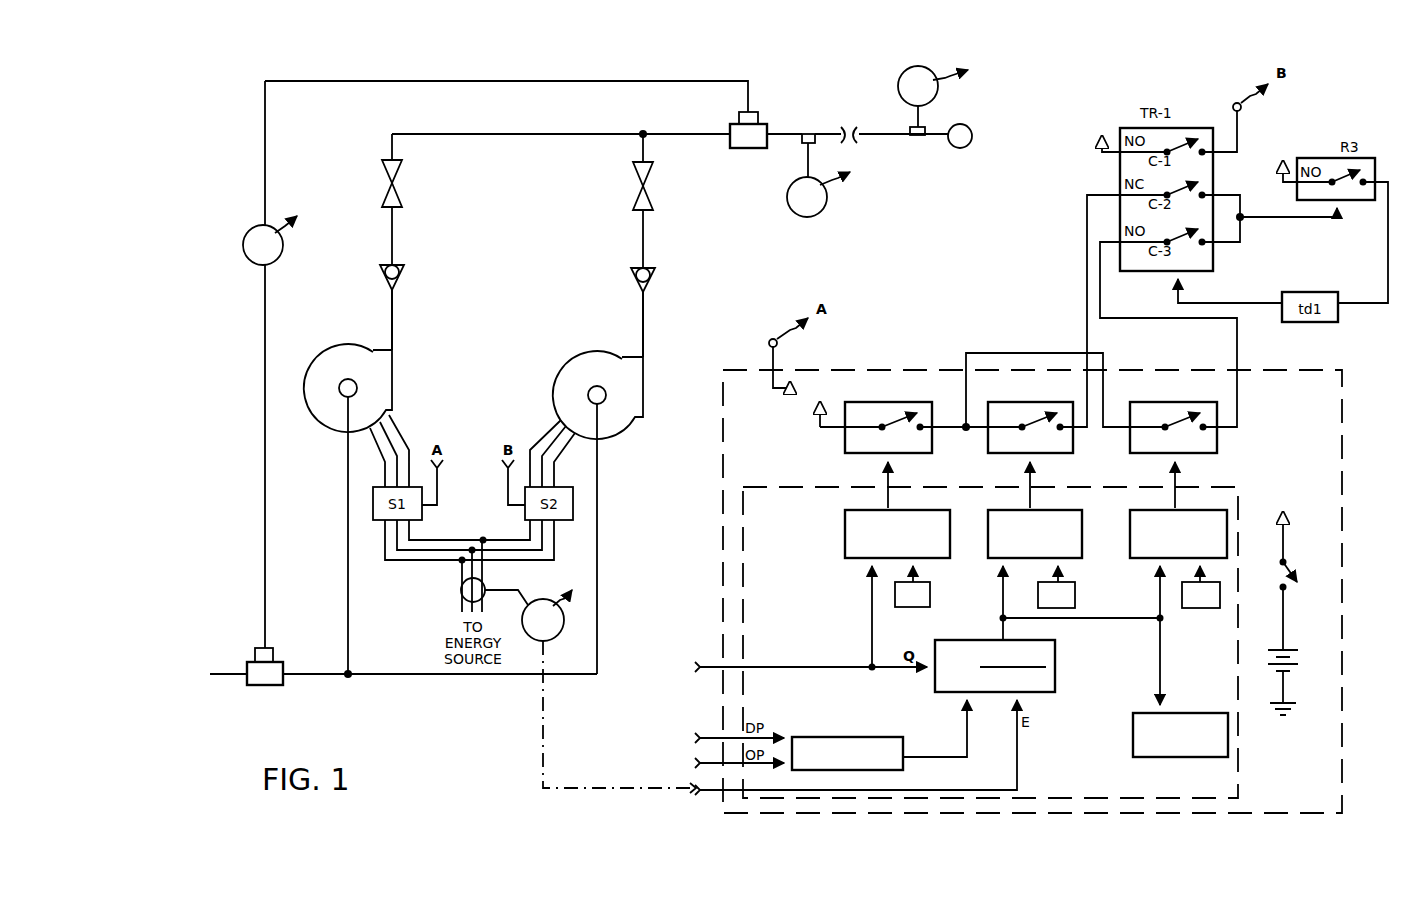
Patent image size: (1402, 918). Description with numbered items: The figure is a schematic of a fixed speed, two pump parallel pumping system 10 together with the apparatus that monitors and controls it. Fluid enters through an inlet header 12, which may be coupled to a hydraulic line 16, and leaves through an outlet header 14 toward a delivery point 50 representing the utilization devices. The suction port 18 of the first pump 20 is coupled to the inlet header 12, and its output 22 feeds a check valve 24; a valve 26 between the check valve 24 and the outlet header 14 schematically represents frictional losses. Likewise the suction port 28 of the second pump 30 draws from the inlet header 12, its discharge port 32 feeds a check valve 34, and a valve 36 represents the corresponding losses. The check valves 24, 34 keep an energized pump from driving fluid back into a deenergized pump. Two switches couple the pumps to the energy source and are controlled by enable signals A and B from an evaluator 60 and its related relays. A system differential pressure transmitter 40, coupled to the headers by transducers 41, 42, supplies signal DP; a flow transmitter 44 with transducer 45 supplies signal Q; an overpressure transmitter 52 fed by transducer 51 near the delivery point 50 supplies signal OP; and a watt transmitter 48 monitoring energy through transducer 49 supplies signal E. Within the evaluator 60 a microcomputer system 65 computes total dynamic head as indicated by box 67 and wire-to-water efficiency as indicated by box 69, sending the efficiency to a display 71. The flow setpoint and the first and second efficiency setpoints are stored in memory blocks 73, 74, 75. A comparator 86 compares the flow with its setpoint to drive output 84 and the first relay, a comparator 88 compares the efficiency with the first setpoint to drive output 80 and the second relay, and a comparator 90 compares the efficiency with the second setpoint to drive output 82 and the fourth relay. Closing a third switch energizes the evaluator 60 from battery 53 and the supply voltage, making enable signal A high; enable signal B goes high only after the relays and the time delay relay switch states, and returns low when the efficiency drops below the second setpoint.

The pumping system 10 is at (515, 232).
The inlet header 12 is at (268, 679).
The outlet header 14 is at (747, 137).
The hydraulic line 16 is at (232, 676).
The suction port 18 is at (339, 388).
The first pump 20 is at (390, 384).
The output 22 is at (395, 350).
The check valve 24 is at (406, 280).
The valve 26 is at (404, 178).
The suction port 28 is at (606, 396).
The second pump 30 is at (563, 365).
The discharge port 32 is at (645, 355).
The check valve 34 is at (651, 277).
The valve 36 is at (655, 183).
The system differential pressure transmitter 40 is at (280, 261).
The transducer 41 is at (272, 655).
The transducer 42 is at (758, 116).
The flow transmitter 44 is at (803, 215).
The transducer 45 is at (812, 122).
The watt transmitter 48 is at (560, 637).
The transducer 49 is at (461, 590).
The delivery point 50 is at (962, 148).
The transducer 51 is at (910, 130).
The overpressure transmitter 52 is at (900, 89).
The battery 53 is at (1300, 656).
The evaluator 60 is at (1350, 460).
The microcomputer system 65 is at (1245, 495).
The box 67 is at (862, 737).
The box 69 is at (1057, 667).
The display 71 is at (1133, 745).
The block 73 is at (905, 608).
The block 74 is at (1075, 596).
The block 75 is at (1205, 608).
The computer output 80 is at (1034, 483).
The computer output 82 is at (1180, 483).
The computer output 84 is at (892, 483).
The comparator 86 is at (845, 540).
The comparator 88 is at (990, 557).
The comparator 90 is at (1140, 545).